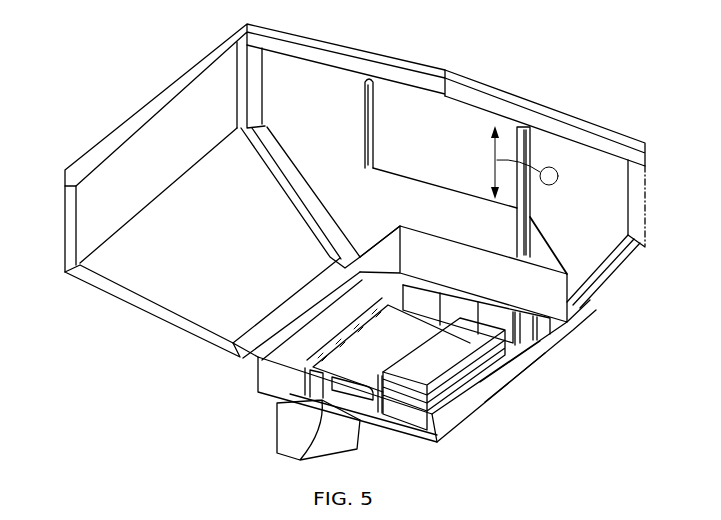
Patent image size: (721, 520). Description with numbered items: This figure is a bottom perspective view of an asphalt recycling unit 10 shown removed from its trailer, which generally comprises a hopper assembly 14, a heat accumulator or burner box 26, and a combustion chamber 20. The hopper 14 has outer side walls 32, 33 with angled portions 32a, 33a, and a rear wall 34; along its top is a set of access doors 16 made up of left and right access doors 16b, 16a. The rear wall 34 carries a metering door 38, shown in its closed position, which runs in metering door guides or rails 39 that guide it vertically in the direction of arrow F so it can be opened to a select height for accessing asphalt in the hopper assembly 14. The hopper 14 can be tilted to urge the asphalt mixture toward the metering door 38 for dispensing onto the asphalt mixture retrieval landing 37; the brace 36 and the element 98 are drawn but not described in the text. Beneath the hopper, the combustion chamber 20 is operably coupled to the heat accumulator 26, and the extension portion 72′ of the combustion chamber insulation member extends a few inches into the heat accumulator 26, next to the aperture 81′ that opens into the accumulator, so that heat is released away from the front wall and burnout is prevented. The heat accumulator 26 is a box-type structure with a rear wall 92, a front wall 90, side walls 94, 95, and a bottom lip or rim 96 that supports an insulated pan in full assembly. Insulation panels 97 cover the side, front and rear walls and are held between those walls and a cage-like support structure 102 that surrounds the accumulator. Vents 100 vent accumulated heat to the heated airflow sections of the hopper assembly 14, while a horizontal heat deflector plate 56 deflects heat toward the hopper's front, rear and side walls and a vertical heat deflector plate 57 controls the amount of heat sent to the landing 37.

The asphalt recycling unit 10 is at (108, 104).
The hopper assembly 14 is at (645, 118).
The access doors 16 is at (440, 62).
The right access door 16a is at (577, 117).
The left access door 16b is at (313, 38).
The combustion chamber 20 is at (286, 430).
The heat accumulator 26 is at (503, 398).
The outer side wall 32 is at (100, 208).
The angled portion 32a is at (207, 251).
The outer side wall 33 is at (647, 181).
The angled portion 33a is at (583, 290).
The rear wall 34 is at (441, 146).
The diagonal brace 36 is at (372, 212).
The asphalt mixture retrieval landing 37 is at (535, 219).
The metering door 38 is at (456, 218).
The metering door guides 39 is at (363, 139).
The horizontal heat deflector plate 56 is at (388, 353).
The vertical heat deflector plate 57 is at (521, 330).
The insulation member extension portion 72′ is at (302, 390).
The aperture 81′ is at (375, 418).
The front wall 90 is at (383, 427).
The rear wall 92 is at (494, 280).
The side wall 94 is at (256, 370).
The side wall 95 is at (527, 360).
The bottom rim 96 is at (515, 366).
The insulation panels 97 is at (403, 418).
The box side wall 98 is at (320, 440).
The vents 100 is at (447, 357).
The cage-like support structure 102 is at (450, 398).